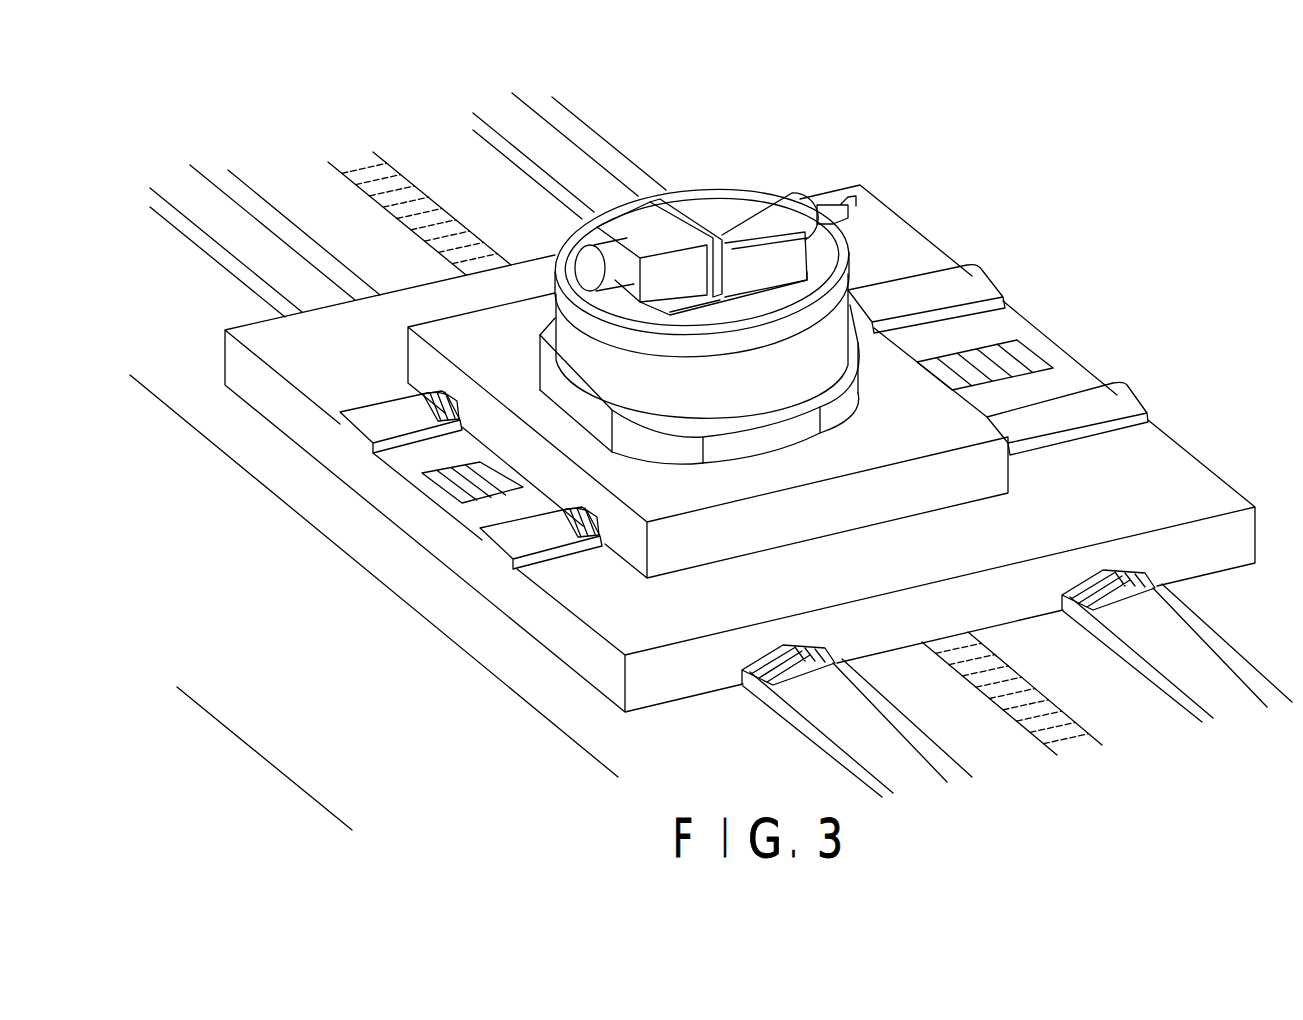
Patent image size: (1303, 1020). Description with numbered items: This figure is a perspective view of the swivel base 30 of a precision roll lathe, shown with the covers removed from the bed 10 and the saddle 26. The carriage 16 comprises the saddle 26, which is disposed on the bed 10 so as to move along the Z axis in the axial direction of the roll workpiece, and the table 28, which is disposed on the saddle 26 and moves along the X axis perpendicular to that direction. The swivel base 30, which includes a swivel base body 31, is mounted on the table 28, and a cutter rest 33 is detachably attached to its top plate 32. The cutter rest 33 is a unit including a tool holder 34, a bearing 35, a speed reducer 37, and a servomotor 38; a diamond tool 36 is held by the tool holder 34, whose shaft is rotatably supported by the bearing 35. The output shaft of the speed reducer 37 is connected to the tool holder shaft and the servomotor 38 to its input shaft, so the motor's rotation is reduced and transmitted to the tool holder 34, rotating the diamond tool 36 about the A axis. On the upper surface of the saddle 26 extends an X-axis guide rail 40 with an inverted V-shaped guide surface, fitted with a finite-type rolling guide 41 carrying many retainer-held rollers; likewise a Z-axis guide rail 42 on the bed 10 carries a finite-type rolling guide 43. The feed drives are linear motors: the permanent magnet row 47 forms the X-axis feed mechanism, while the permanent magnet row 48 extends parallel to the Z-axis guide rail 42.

The bed 10 is at (380, 550).
The carriage 16 is at (924, 208).
The saddle 26 is at (1165, 462).
The table 28 is at (977, 484).
The swivel base 30 is at (543, 283).
The swivel base body 31 is at (820, 365).
The top plate 32 is at (710, 343).
The cutter rest 33 is at (773, 180).
The tool holder 34 is at (810, 198).
The bearing 35 is at (728, 222).
The diamond tool 36 is at (848, 212).
The speed reducer 37 is at (637, 227).
The servomotor 38 is at (585, 262).
The X-axis guide rail 40 is at (384, 402).
The finite-type rolling guide 41 is at (454, 406).
The Z-axis guide rail 42 is at (862, 697).
The finite-type rolling guide 43 is at (762, 661).
The permanent magnet row 47 is at (490, 468).
The permanent magnet row 48 is at (1023, 678).